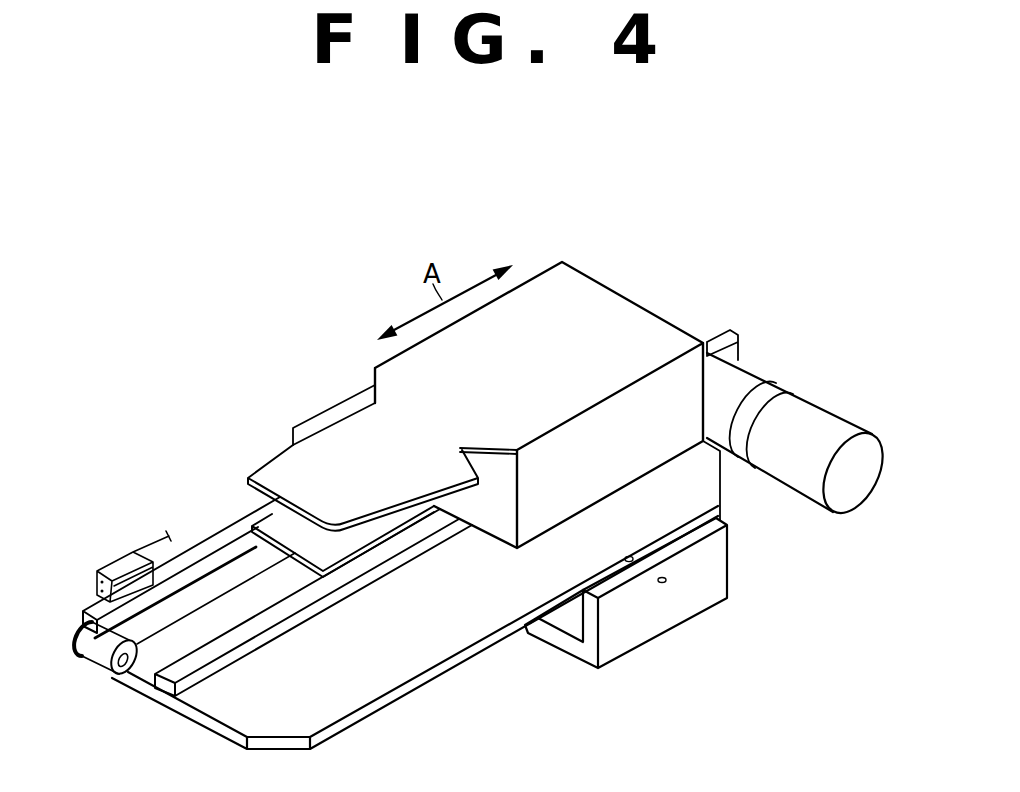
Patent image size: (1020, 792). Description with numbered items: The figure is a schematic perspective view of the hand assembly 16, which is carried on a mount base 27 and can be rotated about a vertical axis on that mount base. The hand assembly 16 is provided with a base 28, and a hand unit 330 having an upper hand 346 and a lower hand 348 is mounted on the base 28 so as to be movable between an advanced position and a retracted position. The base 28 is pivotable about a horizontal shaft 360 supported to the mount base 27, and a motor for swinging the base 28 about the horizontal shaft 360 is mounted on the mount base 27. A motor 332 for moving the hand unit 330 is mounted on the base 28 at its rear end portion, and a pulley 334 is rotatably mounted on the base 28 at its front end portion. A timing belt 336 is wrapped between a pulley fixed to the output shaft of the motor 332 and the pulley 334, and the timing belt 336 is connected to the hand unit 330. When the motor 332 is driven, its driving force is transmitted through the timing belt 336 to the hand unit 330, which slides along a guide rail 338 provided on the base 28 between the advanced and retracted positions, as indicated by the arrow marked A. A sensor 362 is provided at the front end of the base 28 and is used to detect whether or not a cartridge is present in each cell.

The hand assembly 16 is at (316, 316).
The mount base 27 is at (624, 639).
The base 28 is at (205, 727).
The hand unit 330 is at (588, 270).
The motor 332 is at (818, 420).
The pulley 334 is at (110, 662).
The timing belt 336 is at (220, 562).
The guide rail 338 is at (270, 620).
The upper hand 346 is at (328, 455).
The lower hand 348 is at (340, 541).
The horizontal shaft 360 is at (667, 582).
The sensor 362 is at (120, 563).